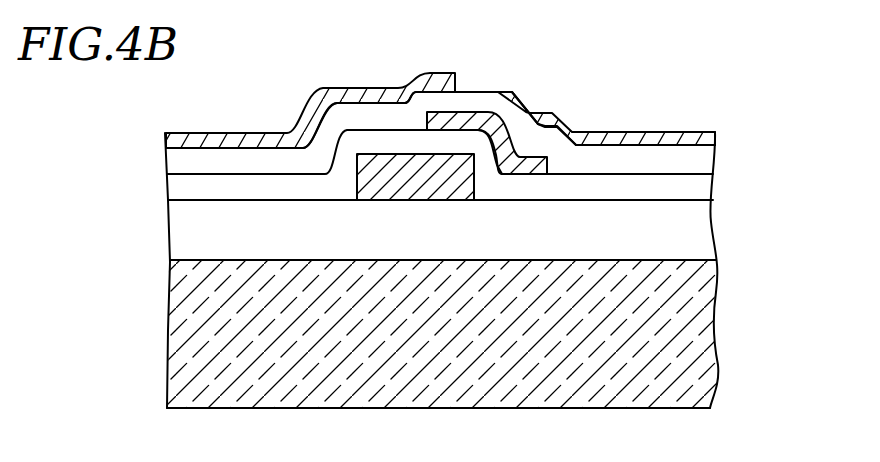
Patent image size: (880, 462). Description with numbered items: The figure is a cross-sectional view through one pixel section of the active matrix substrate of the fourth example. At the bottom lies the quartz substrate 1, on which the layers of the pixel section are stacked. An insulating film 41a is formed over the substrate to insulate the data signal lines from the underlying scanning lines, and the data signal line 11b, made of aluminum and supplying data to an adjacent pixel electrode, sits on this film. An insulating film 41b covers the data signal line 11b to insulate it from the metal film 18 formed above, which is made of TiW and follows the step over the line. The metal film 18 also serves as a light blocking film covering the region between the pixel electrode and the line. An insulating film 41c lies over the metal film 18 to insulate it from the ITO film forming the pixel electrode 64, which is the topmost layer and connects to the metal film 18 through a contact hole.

The quartz substrate 1 is at (693, 318).
The insulating film 41a is at (190, 237).
The insulating film 41b is at (185, 192).
The insulating film 41c is at (185, 162).
The data signal line 11b is at (363, 153).
The metal film 18 is at (531, 160).
The pixel electrode 64 is at (517, 93).